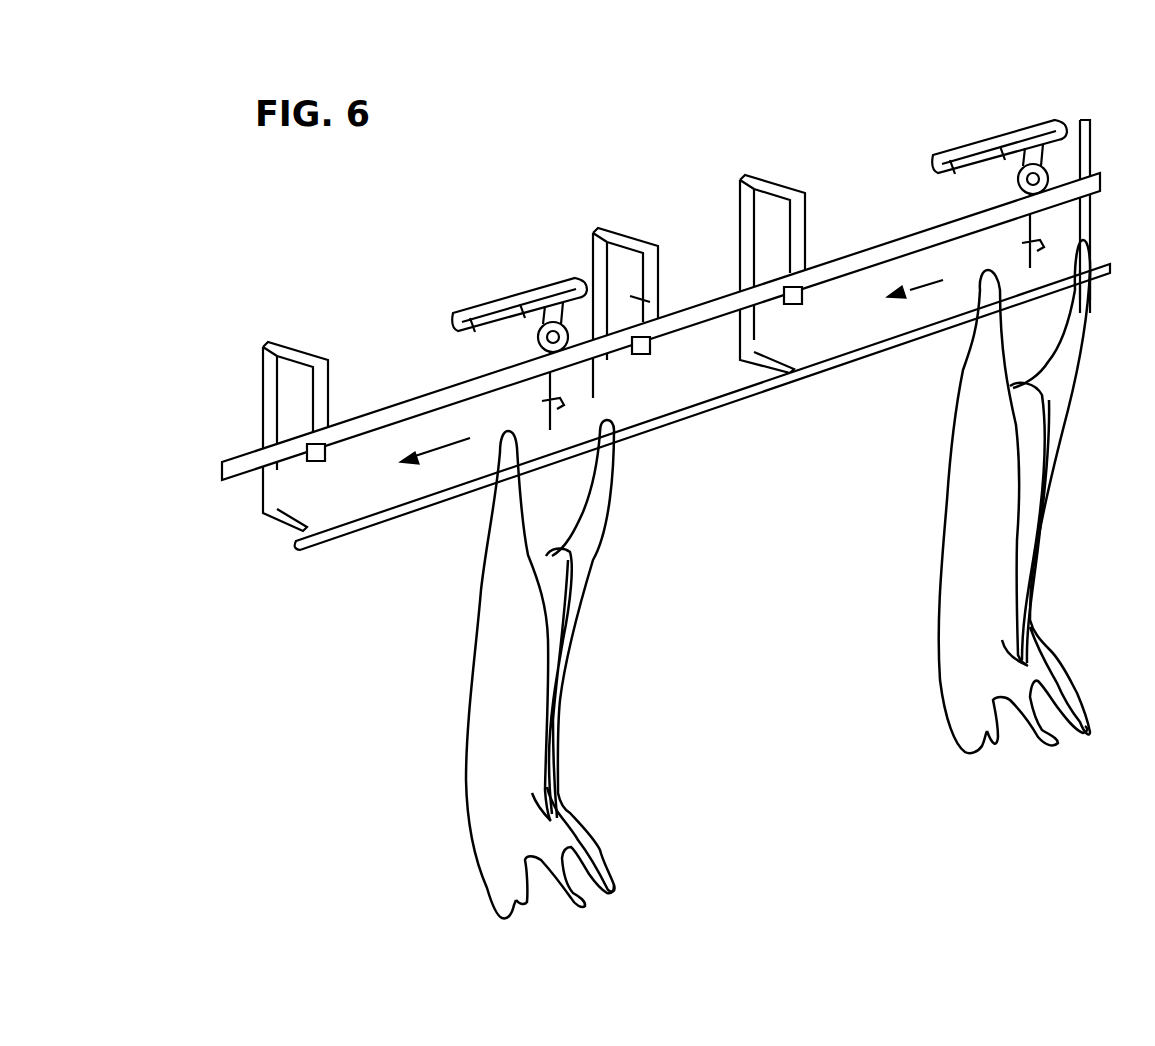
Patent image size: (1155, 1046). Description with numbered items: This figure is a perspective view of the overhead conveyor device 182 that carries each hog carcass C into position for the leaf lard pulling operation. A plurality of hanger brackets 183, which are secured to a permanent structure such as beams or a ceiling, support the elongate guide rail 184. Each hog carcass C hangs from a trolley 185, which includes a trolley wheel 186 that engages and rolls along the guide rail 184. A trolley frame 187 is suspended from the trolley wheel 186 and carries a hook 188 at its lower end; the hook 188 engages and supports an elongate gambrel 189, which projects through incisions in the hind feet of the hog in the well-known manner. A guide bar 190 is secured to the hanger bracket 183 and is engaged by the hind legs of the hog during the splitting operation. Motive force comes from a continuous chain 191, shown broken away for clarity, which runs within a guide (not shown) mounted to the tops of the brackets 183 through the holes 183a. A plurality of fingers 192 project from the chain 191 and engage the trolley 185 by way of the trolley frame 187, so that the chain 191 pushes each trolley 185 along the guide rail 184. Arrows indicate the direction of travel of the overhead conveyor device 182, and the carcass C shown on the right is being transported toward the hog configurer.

The overhead conveyor device 182 is at (657, 311).
The hanger bracket 183 is at (290, 340).
The hole 183a is at (315, 362).
The guide rail 184 is at (232, 472).
The trolley 185 is at (492, 356).
The trolley wheel 186 is at (570, 343).
The trolley frame 187 is at (544, 395).
The hook 188 is at (1078, 233).
The gambrel 189 is at (612, 440).
The guide bar 190 is at (330, 553).
The chain 191 is at (759, 262).
The finger 192 is at (632, 297).
The hog carcass C is at (962, 757).